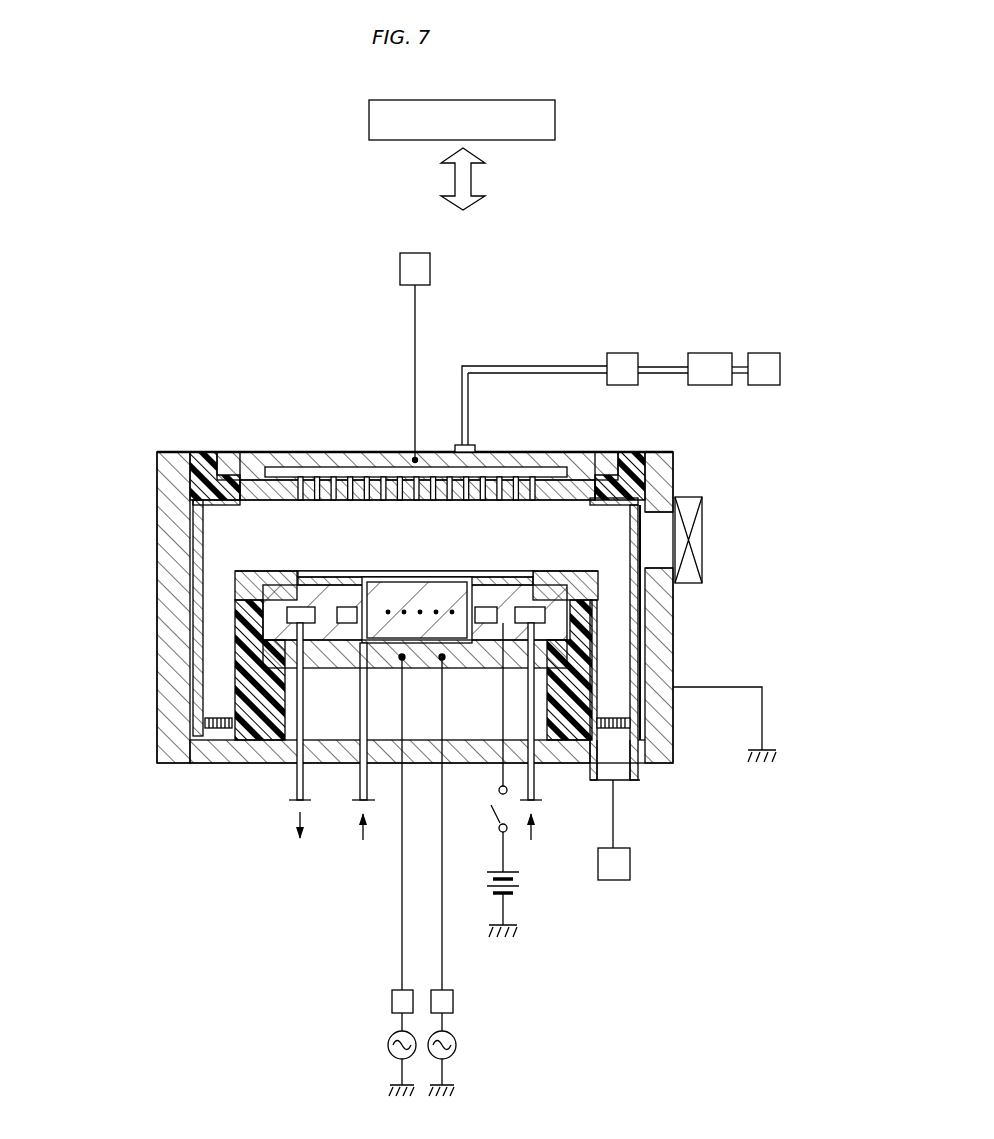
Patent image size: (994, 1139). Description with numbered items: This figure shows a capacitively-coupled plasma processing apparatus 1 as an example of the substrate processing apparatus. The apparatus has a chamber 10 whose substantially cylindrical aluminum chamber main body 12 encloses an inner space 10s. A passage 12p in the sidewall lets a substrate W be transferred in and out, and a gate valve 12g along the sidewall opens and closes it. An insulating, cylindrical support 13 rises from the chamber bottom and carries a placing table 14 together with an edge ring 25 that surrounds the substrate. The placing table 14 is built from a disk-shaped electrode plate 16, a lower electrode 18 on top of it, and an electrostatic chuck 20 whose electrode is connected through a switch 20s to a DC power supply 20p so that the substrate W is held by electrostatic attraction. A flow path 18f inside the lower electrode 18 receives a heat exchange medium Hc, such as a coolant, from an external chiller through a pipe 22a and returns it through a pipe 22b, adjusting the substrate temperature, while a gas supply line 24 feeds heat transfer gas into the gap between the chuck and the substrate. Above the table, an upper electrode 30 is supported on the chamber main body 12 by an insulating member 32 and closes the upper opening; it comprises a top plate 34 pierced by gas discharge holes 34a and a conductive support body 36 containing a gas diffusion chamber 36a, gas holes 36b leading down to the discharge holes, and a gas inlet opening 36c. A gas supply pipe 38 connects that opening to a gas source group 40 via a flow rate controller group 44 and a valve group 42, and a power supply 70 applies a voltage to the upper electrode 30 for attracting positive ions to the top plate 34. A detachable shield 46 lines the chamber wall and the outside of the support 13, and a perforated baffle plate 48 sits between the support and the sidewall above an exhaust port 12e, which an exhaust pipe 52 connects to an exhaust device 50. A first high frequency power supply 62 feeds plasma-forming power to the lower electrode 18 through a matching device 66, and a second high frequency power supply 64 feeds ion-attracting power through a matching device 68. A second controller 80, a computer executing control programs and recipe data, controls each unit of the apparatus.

The plasma processing apparatus 1 is at (655, 170).
The chamber 10 is at (183, 432).
The inner space 10s is at (225, 548).
The chamber main body 12 is at (157, 497).
The exhaust port 12e is at (605, 748).
The gate valve 12g is at (704, 516).
The passage 12p is at (667, 548).
The support 13 is at (592, 606).
The placing table 14 is at (100, 600).
The electrode plate 16 is at (283, 655).
The lower electrode 18 is at (283, 626).
The flow path 18f is at (306, 611).
The electrostatic chuck 20 is at (300, 598).
The switch 20s is at (486, 810).
The DC power supply 20p is at (530, 885).
The pipe 22a is at (538, 786).
The pipe 22b is at (291, 786).
The gas supply line 24 is at (358, 786).
The edge ring 25 is at (281, 571).
The upper electrode 30 is at (523, 513).
The member 32 is at (630, 452).
The top plate 34 is at (390, 501).
The gas discharge holes 34a is at (431, 501).
The support body 36 is at (270, 452).
The gas diffusion chamber 36a is at (374, 468).
The gas holes 36b is at (540, 486).
The gas inlet opening 36c is at (463, 444).
The gas supply pipe 38 is at (540, 366).
The gas source group 40 is at (765, 353).
The valve group 42 is at (622, 353).
The flow rate controller group 44 is at (710, 353).
The shield 46 is at (198, 565).
The baffle plate 48 is at (216, 730).
The exhaust device 50 is at (630, 862).
The exhaust pipe 52 is at (643, 770).
The first high frequency power supply 62 is at (388, 1045).
The second high frequency power supply 64 is at (456, 1045).
The matching device 66 is at (392, 1002).
The matching device 68 is at (453, 1002).
The power supply 70 is at (400, 270).
The second controller 80 is at (470, 100).
The substrate W is at (483, 571).
The heat exchange medium Hc is at (365, 841).